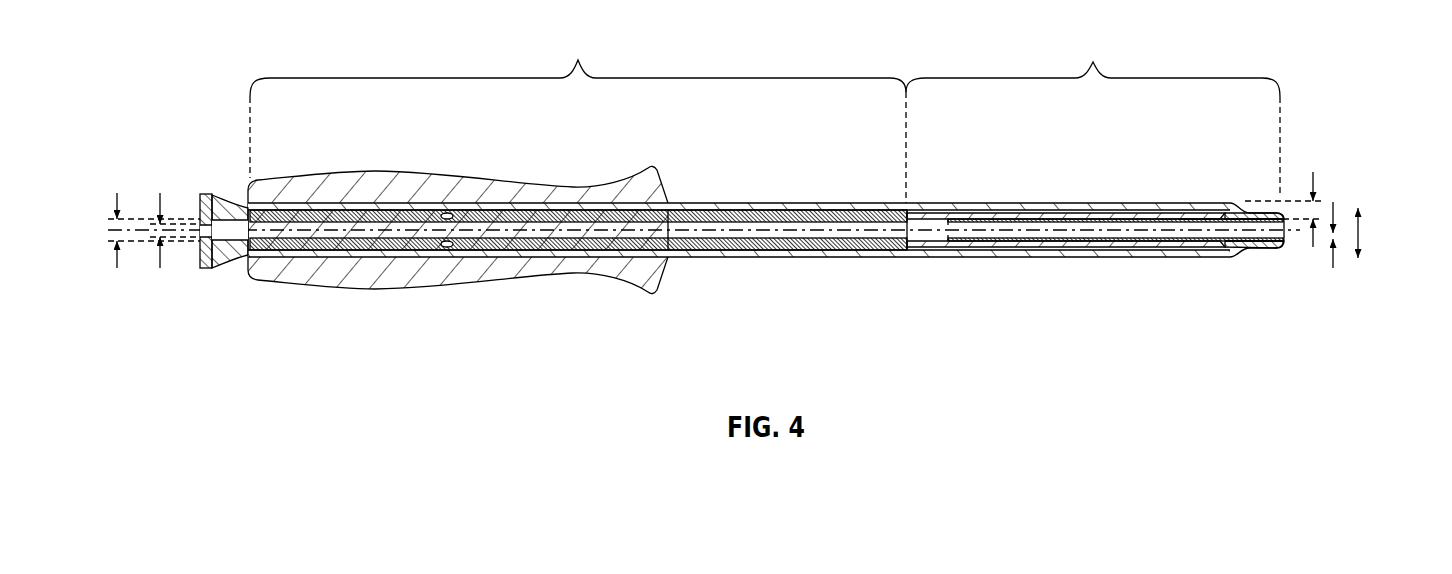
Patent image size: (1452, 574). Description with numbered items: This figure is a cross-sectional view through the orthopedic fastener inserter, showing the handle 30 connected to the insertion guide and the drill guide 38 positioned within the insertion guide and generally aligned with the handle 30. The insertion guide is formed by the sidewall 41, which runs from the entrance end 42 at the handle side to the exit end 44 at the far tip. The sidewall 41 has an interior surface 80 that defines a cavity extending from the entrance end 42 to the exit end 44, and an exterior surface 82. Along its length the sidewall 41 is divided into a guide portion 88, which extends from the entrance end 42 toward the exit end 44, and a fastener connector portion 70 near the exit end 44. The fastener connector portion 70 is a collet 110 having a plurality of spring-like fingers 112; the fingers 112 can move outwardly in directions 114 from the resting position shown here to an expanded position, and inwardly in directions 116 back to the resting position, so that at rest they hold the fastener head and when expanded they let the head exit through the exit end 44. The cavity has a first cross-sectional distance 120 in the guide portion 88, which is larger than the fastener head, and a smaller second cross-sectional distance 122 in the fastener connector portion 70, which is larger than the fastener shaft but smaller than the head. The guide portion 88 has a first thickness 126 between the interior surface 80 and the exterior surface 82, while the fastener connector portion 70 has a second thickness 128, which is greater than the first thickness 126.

The handle 30 is at (452, 173).
The drill guide 38 is at (216, 265).
The sidewall 41 is at (842, 203).
The entrance end 42 is at (248, 203).
The exit end 44 is at (1285, 242).
The fastener connector portion 70 is at (1093, 111).
The interior surface 80 is at (1183, 251).
The exterior surface 82 is at (1229, 255).
The guide portion 88 is at (578, 116).
The collet 110 is at (976, 257).
The fingers 112 is at (1113, 257).
The directions 114 is at (1360, 232).
The directions 116 is at (1334, 268).
The first cross-sectional distance 120 is at (112, 219).
The second cross-sectional distance 122 is at (157, 255).
The first thickness 126 is at (870, 250).
The second thickness 128 is at (1316, 185).